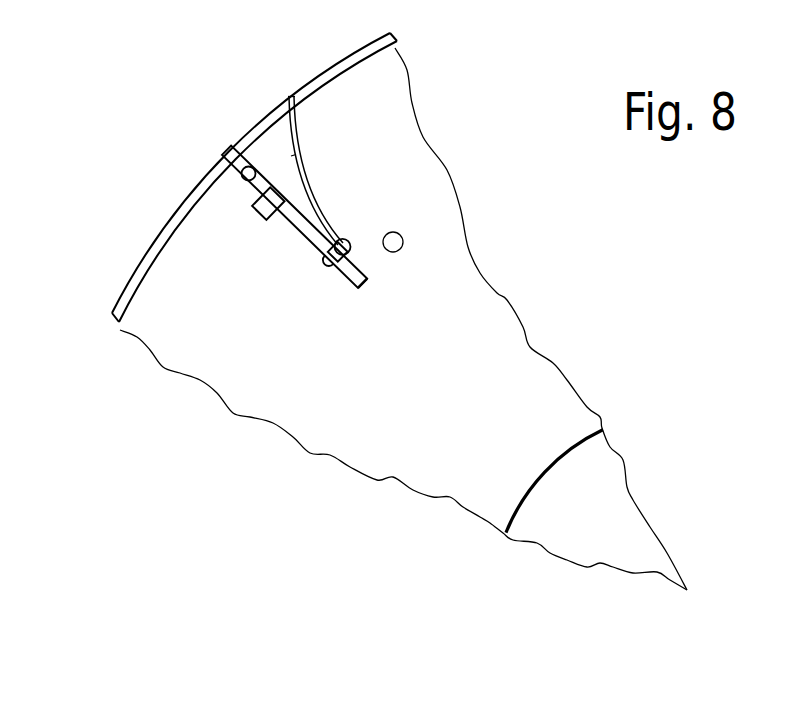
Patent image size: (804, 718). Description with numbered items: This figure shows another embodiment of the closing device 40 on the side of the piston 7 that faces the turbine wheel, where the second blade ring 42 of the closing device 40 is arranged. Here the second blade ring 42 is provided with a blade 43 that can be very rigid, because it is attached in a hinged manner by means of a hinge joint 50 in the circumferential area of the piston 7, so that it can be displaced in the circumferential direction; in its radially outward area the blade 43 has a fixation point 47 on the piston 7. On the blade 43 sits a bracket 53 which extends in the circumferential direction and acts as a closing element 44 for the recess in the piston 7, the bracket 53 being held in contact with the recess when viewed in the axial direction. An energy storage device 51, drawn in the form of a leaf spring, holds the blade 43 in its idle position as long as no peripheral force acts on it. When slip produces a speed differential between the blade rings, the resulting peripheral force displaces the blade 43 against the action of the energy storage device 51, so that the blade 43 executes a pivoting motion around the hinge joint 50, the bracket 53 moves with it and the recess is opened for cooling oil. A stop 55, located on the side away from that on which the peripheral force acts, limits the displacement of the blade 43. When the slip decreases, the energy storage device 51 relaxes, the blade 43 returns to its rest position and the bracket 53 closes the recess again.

The piston 7 is at (170, 271).
The closing device 40 is at (355, 194).
The second blade ring 42 is at (328, 298).
The blade 43 is at (357, 290).
The closing element 44 is at (201, 299).
The fixation point 47 is at (229, 150).
The hinge joint 50 is at (241, 176).
The energy storage device 51 is at (303, 152).
The bracket 53 is at (251, 207).
The stop 55 is at (404, 240).